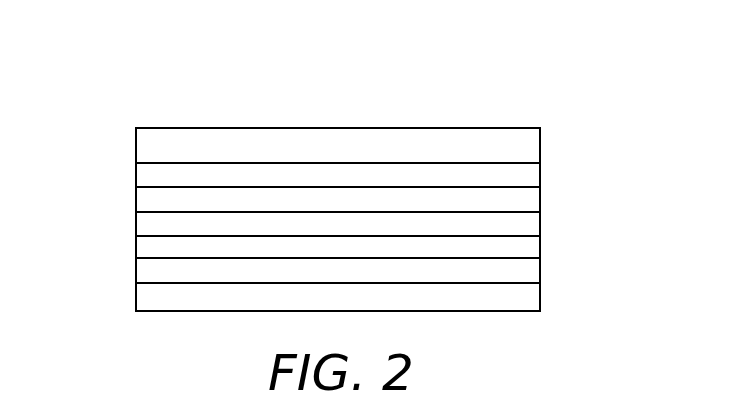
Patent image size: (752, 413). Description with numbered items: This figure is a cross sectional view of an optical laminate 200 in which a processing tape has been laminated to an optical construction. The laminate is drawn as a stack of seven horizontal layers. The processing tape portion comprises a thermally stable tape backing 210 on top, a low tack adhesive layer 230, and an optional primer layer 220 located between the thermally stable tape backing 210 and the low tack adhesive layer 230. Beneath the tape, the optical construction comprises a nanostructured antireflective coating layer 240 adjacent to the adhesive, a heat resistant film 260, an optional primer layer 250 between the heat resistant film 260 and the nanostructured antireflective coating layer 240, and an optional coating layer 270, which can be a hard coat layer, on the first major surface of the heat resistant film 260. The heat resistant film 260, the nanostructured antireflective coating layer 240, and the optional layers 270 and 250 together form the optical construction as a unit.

The optical laminate 200 is at (146, 54).
The thermally stable tape backing 210 is at (540, 143).
The optional primer layer 220 is at (540, 175).
The low tack adhesive layer 230 is at (540, 198).
The nanostructured antireflective coating layer 240 is at (540, 223).
The optional primer layer 250 is at (540, 247).
The heat resistant film 260 is at (540, 269).
The optional coating layer 270 is at (540, 303).